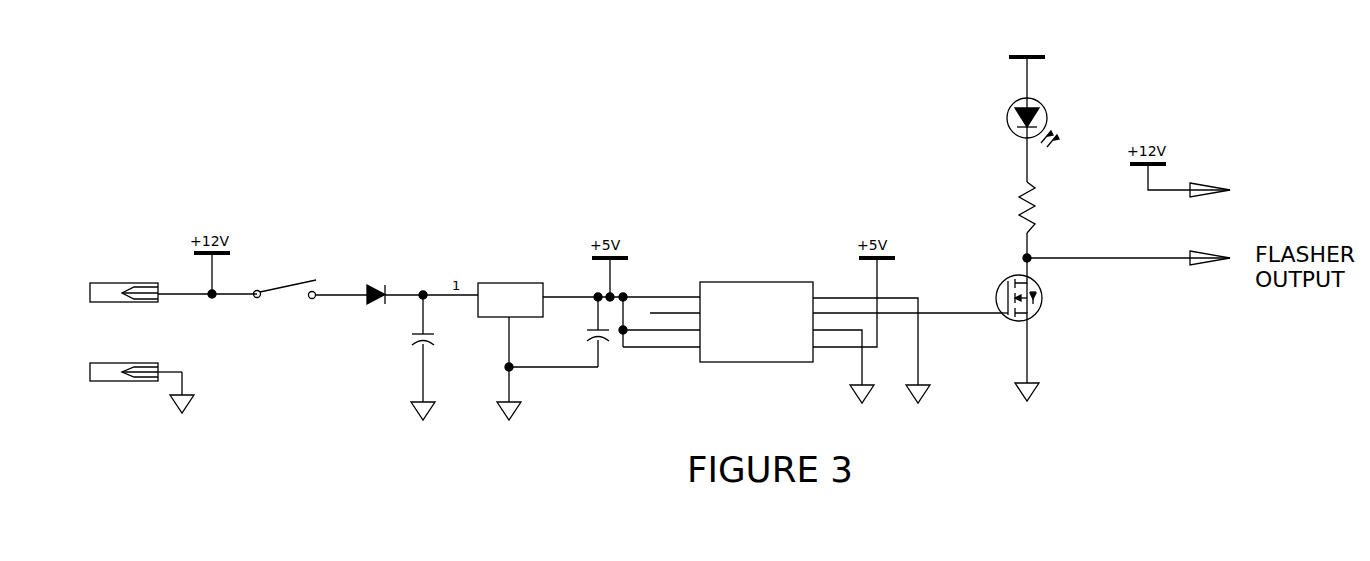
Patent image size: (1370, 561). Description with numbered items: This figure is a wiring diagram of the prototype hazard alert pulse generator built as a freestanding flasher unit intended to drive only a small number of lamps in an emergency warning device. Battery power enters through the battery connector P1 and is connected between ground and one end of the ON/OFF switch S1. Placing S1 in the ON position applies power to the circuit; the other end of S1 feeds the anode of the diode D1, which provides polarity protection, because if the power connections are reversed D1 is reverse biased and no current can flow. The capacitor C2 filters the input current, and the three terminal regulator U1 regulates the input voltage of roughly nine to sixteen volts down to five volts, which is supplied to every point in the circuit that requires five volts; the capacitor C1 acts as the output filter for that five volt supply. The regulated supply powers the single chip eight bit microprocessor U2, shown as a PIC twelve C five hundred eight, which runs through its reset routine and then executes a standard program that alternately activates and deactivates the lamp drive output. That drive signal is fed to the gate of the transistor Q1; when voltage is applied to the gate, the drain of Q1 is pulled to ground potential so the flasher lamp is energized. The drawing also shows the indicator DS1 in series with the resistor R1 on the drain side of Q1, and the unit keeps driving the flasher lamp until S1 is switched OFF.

The +12V battery connector P1 is at (134, 323).
The ON/OFF switch S1 is at (285, 289).
The polarity protection diode D1 is at (378, 296).
The input filter capacitor C2 is at (443, 357).
The three terminal regulator U1 is at (525, 307).
The output filter capacitor C1 is at (562, 332).
The PIC12C508 microcontroller U2 is at (757, 323).
The LED indicator DS1 is at (1027, 109).
The 1K resistor R1 is at (1024, 228).
The transistor Q1 is at (1002, 329).